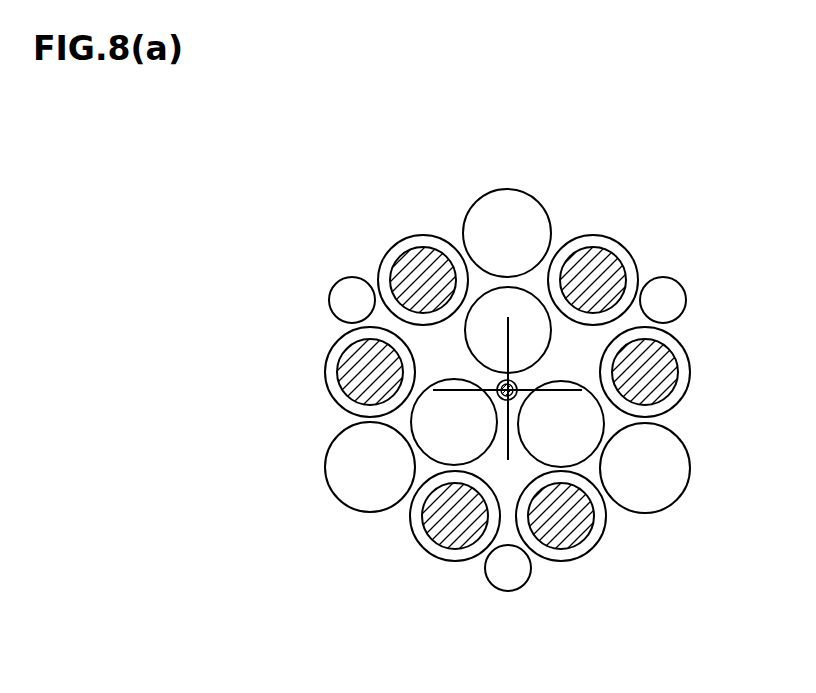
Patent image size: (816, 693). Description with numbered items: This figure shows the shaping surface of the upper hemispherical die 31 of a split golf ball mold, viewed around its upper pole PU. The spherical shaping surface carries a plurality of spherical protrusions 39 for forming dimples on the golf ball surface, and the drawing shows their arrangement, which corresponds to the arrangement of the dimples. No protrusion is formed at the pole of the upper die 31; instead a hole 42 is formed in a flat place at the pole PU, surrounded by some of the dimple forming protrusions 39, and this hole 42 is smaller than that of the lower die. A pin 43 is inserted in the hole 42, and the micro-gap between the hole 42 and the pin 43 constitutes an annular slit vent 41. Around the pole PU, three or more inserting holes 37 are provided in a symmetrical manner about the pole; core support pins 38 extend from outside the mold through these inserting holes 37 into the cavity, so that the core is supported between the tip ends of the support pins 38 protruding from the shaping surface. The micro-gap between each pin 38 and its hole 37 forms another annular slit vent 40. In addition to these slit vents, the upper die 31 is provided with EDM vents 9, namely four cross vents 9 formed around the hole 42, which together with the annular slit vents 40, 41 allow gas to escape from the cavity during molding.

The upper hemispherical die 31 is at (724, 333).
The inserting hole 37 is at (355, 378).
The core support pin 38 is at (348, 388).
The annular slit vent 40 is at (350, 403).
The spherical protrusion 39 is at (355, 483).
The EDM vent 9 is at (605, 373).
The pin 43 is at (518, 400).
The upper pole PU is at (499, 396).
The annular slit vent 41 is at (498, 388).
The hole 42 is at (514, 386).